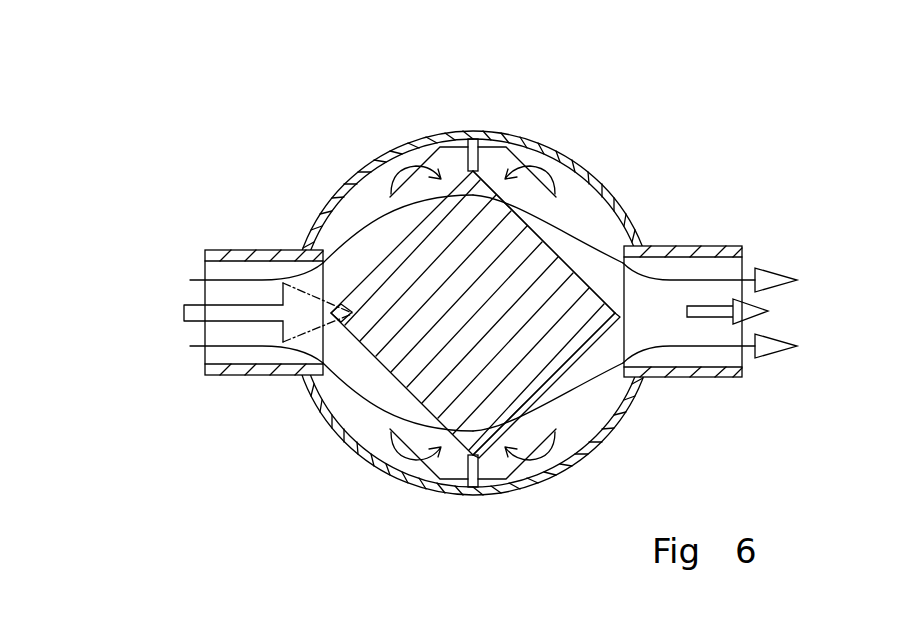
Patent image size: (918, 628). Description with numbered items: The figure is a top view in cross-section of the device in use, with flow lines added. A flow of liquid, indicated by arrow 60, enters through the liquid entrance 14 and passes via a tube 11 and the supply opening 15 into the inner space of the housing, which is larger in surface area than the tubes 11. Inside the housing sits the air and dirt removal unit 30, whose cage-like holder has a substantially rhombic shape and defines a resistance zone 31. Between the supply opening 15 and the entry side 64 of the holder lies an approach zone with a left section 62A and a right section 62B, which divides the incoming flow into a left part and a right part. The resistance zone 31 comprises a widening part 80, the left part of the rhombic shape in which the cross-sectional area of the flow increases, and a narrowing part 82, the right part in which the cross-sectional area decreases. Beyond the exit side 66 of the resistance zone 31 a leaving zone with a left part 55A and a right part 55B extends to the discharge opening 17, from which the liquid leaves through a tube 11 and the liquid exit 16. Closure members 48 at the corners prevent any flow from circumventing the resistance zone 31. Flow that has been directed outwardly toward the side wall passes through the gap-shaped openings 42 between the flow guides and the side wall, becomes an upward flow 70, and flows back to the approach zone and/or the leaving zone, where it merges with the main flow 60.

The tube 11 is at (237, 250).
The liquid entrance 14 is at (205, 252).
The supply opening 15 is at (232, 378).
The liquid exit 16 is at (745, 252).
The discharge opening 17 is at (648, 256).
The air and dirt removal unit 30 is at (562, 196).
The resistance zone 31 is at (487, 327).
The openings 42 is at (345, 222).
The closure members 48 is at (481, 491).
The left part of the leaving zone 55A is at (582, 203).
The right part of the leaving zone 55B is at (570, 403).
The arrow indicating main flow 60 is at (185, 321).
The left section of the approach zone 62A is at (358, 203).
The right section of the approach zone 62B is at (362, 428).
The entry side 64 is at (432, 168).
The exit side 66 is at (606, 228).
The upward flow 70 is at (405, 162).
The widening part 80 is at (413, 327).
The narrowing part 82 is at (552, 327).